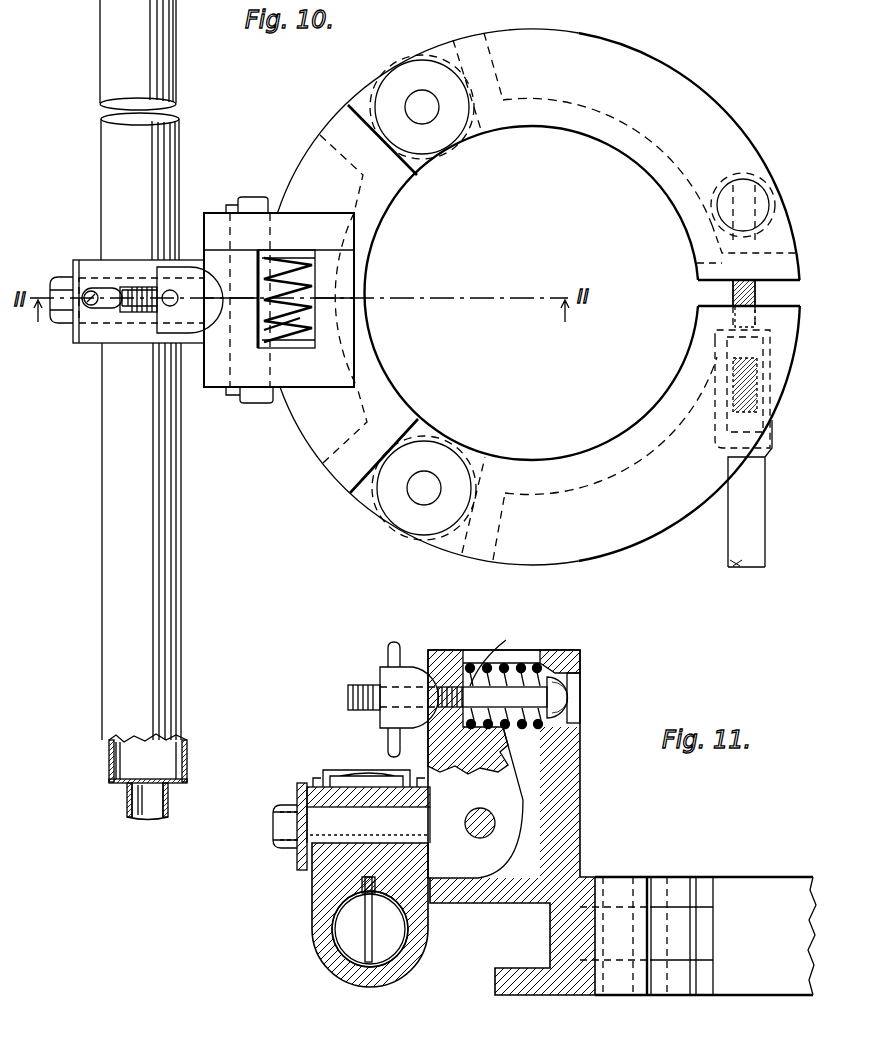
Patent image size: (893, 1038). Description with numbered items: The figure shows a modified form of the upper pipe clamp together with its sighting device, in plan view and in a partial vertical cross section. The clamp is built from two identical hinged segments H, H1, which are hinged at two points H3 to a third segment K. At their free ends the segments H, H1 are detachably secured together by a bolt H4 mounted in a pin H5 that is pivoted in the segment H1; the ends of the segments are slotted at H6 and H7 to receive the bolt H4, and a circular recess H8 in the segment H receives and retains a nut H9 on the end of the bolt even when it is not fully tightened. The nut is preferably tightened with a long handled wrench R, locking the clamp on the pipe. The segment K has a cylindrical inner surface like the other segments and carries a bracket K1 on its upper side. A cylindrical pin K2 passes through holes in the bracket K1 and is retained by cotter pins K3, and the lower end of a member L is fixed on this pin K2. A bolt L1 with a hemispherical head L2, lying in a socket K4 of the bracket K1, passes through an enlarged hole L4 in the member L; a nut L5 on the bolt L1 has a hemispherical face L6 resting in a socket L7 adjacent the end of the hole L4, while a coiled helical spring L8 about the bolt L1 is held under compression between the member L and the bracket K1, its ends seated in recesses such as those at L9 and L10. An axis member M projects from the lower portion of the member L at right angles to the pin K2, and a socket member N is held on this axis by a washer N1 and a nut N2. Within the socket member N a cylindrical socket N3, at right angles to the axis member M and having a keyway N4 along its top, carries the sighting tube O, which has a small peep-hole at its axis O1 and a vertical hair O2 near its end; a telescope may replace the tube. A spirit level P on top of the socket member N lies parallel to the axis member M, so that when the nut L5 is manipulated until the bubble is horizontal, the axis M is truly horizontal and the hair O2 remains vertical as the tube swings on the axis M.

In FIG. 10, the segment H is at (672, 516).
In FIG. 10, the segment H1 is at (655, 75).
In FIG. 11, the segment H1 is at (770, 882).
In FIG. 10, the hinge H3 is at (418, 106).
In FIG. 11, the hinge H3 is at (665, 885).
In FIG. 10, the bolt H4 is at (733, 293).
In FIG. 10, the pin H5 is at (760, 196).
In FIG. 10, the slot H6 is at (738, 316).
In FIG. 10, the slot H7 is at (732, 262).
In FIG. 10, the circular recess H8 is at (718, 338).
In FIG. 10, the nut H9 is at (733, 360).
In FIG. 10, the segment K is at (390, 205).
In FIG. 11, the segment K is at (580, 882).
In FIG. 10, the bracket K1 is at (338, 255).
In FIG. 11, the bracket K1 is at (578, 750).
In FIG. 10, the cylindrical pin K2 is at (272, 404).
In FIG. 11, the cylindrical pin K2 is at (496, 824).
In FIG. 10, the cotter pin K3 is at (238, 197).
In FIG. 11, the socket K4 is at (580, 680).
In FIG. 10, the member L is at (262, 270).
In FIG. 11, the member L is at (504, 792).
In FIG. 10, the bolt L1 is at (138, 284).
In FIG. 11, the bolt L1 is at (350, 695).
In FIG. 11, the hemispherical head L2 is at (565, 699).
In FIG. 11, the enlarged hole L4 is at (455, 682).
In FIG. 10, the nut L5 is at (175, 280).
In FIG. 11, the nut L5 is at (390, 676).
In FIG. 11, the hemispherical face L6 is at (426, 672).
In FIG. 11, the socket L7 is at (438, 668).
In FIG. 10, the coiled helical spring L8 is at (288, 295).
In FIG. 11, the coiled helical spring L8 is at (506, 664).
In FIG. 11, the shoulder L9 is at (555, 668).
In FIG. 10, the spring seat L10 is at (265, 318).
In FIG. 11, the spring seat L10 is at (506, 640).
In FIG. 10, the axis member M is at (116, 348).
In FIG. 11, the axis member M is at (369, 825).
In FIG. 10, the socket member N is at (92, 350).
In FIG. 11, the socket member N is at (314, 934).
In FIG. 10, the washer N1 is at (76, 346).
In FIG. 11, the washer N1 is at (300, 800).
In FIG. 10, the nut N2 is at (60, 326).
In FIG. 11, the nut N2 is at (280, 814).
In FIG. 10, the cylindrical socket N3 is at (100, 270).
In FIG. 11, the cylindrical socket N3 is at (352, 968).
In FIG. 11, the keyway N4 is at (362, 880).
In FIG. 10, the sighting tube O is at (176, 92).
In FIG. 11, the sighting tube O is at (386, 966).
In FIG. 10, the axis O1 is at (147, 818).
In FIG. 10, the vertical hair O2 is at (138, 18).
In FIG. 11, the vertical hair O2 is at (374, 938).
In FIG. 10, the spirit level P is at (122, 296).
In FIG. 11, the spirit level P is at (365, 770).
In FIG. 10, the long handled wrench R is at (757, 489).